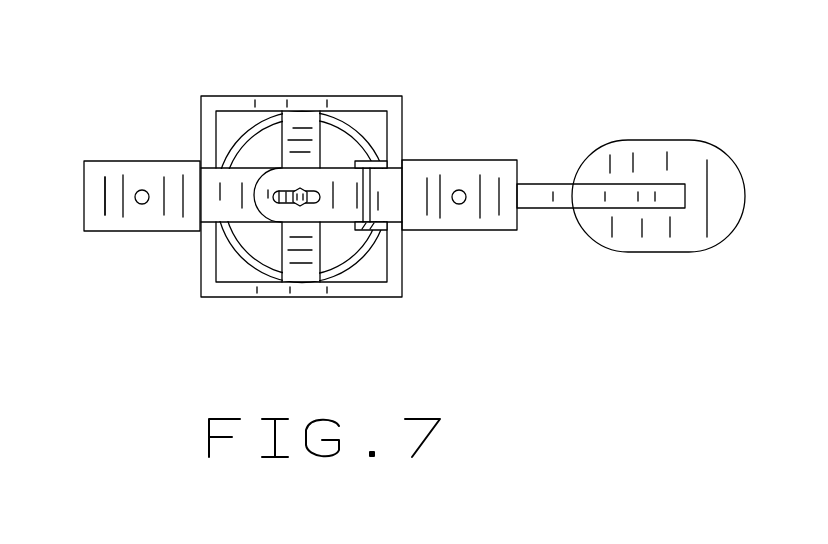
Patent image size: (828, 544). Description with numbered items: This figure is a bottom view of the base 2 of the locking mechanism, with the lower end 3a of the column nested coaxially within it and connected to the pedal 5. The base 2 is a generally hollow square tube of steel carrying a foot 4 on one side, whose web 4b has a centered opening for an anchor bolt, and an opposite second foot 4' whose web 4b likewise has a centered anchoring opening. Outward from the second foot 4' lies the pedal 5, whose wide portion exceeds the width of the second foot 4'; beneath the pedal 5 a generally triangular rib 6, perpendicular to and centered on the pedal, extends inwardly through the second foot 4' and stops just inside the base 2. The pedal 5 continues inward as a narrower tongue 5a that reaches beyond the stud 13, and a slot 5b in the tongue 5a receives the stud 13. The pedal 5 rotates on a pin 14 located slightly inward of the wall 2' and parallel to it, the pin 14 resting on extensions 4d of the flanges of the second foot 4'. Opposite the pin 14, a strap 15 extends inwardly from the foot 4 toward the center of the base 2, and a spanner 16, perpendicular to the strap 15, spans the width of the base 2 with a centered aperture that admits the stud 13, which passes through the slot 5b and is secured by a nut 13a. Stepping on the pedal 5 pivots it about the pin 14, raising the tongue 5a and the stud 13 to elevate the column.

The base 2 is at (301, 167).
The wall 2' is at (349, 196).
The lower end of the column 3a is at (336, 116).
The foot 4 is at (142, 165).
The second foot 4' is at (467, 162).
The web 4b is at (102, 192).
The extensions 4d is at (383, 160).
The pedal 5 is at (657, 140).
The tongue 5a is at (275, 197).
The slot 5b is at (285, 197).
The rib 6 is at (602, 197).
The stud 13 is at (287, 198).
The nut 13a is at (300, 206).
The pin 14 is at (371, 180).
The strap 15 is at (227, 188).
The spanner 16 is at (303, 125).